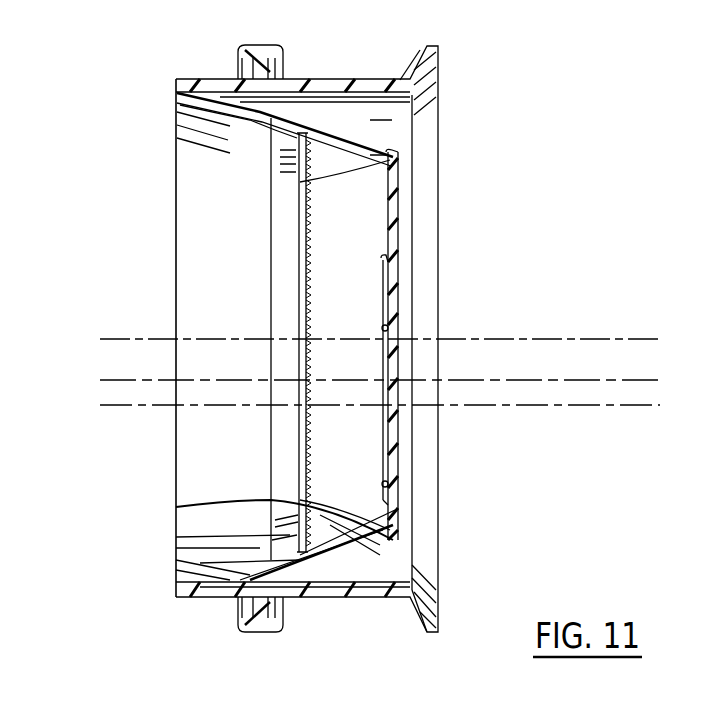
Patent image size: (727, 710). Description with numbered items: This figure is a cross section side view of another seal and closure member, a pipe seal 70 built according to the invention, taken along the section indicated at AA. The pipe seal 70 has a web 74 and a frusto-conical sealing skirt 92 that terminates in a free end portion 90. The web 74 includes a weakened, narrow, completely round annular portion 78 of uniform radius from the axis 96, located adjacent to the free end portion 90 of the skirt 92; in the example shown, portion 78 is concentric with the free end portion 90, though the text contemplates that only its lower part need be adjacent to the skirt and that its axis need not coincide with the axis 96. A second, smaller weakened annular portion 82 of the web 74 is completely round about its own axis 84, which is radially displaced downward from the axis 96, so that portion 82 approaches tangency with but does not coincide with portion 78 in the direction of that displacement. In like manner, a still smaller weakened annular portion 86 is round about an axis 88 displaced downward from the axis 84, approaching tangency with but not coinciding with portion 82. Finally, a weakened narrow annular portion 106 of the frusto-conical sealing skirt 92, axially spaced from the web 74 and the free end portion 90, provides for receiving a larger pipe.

The pipe seal 70 is at (440, 592).
The web 74 is at (400, 193).
The annular portion 78 is at (303, 184).
The annular portion 82 is at (388, 268).
The axis 84 is at (532, 380).
The annular portion 86 is at (388, 328).
The axis 88 is at (612, 405).
The free end portion 90 is at (392, 532).
The frusto-conical sealing skirt 92 is at (327, 552).
The axis 96 is at (159, 338).
The annular portion 106 is at (298, 132).
The section axis AA is at (262, 128).